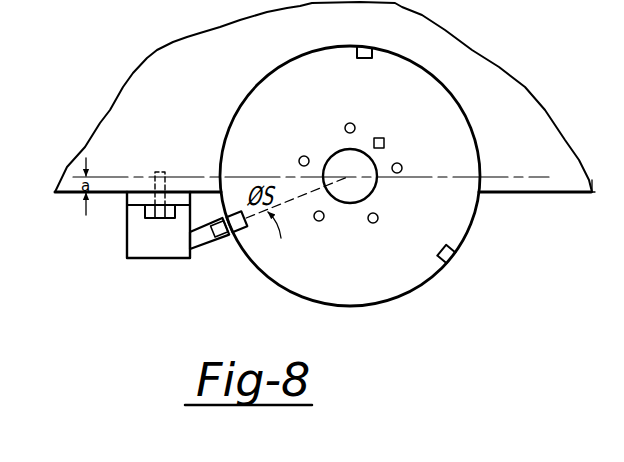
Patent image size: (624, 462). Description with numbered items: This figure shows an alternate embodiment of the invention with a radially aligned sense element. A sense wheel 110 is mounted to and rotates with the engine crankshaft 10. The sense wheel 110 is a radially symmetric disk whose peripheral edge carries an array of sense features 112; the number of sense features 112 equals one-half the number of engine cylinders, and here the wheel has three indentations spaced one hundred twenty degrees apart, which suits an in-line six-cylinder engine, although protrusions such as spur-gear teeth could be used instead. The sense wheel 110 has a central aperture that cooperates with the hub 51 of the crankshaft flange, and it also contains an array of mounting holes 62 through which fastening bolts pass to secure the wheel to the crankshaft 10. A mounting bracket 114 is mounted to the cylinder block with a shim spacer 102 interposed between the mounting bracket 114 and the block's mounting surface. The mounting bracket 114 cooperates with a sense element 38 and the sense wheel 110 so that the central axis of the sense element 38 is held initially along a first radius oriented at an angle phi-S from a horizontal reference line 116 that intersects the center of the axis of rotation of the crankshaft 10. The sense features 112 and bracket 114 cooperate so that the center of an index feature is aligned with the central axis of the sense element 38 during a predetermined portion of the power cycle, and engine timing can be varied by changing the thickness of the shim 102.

The engine crankshaft 10 is at (357, 176).
The sense element 38 is at (222, 240).
The hub of the crankshaft flange 51 is at (344, 204).
The mounting holes 62 is at (318, 146).
The shim spacer 102 is at (135, 199).
The sense wheel 110 is at (316, 304).
The sense features 112 is at (448, 256).
The mounting bracket 114 is at (167, 250).
The horizontal reference line 116 is at (536, 178).